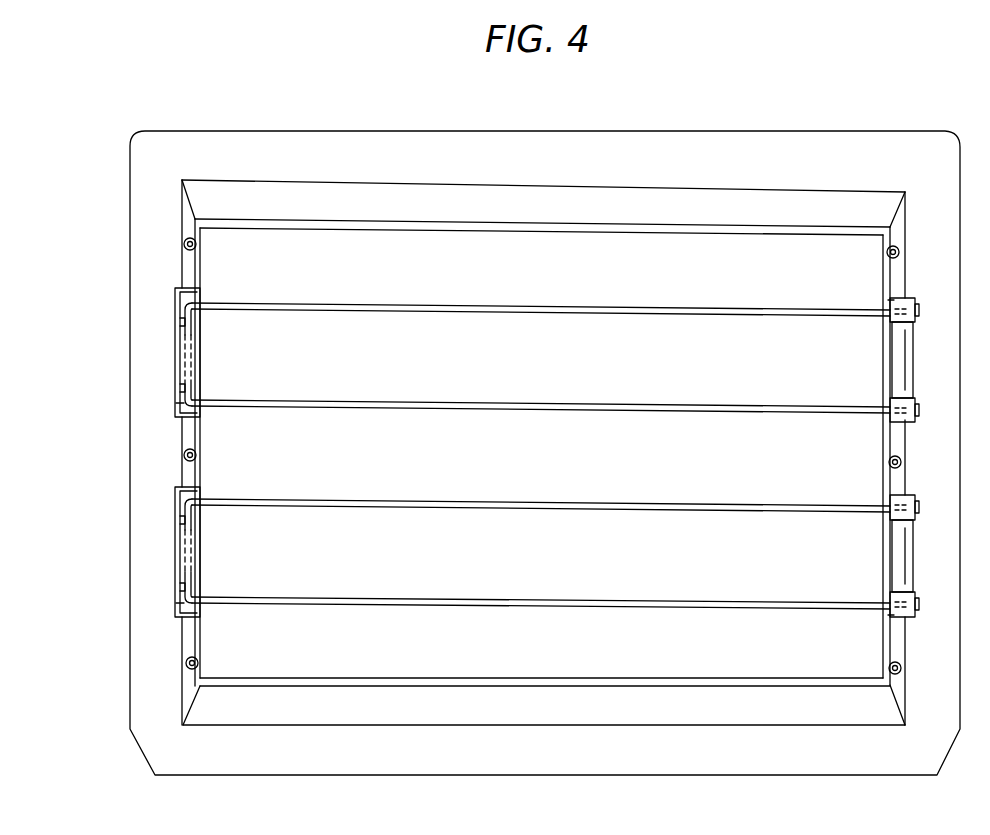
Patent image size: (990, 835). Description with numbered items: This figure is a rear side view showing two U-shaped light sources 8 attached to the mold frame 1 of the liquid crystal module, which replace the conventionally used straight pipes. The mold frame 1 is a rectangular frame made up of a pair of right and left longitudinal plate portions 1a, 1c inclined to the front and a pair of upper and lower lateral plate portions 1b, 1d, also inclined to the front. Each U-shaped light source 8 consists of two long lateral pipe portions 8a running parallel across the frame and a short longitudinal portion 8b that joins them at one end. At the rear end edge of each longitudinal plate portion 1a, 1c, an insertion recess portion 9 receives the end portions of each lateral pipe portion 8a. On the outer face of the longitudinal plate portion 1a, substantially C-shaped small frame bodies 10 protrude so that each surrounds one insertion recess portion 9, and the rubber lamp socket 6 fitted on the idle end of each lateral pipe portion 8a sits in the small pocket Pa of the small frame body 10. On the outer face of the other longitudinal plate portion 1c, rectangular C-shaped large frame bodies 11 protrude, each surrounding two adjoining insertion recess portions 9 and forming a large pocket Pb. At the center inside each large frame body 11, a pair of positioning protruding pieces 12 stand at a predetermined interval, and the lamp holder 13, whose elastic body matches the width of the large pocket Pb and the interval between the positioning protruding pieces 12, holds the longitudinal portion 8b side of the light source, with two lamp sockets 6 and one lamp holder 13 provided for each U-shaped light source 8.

The mold frame 1 is at (127, 171).
The longitudinal plate portion 1a is at (900, 232).
The upper lateral plate portion 1b is at (533, 204).
The longitudinal plate portion 1c is at (186, 226).
The lower lateral plate portion 1d is at (540, 710).
The lamp socket 6 is at (906, 299).
The U-shaped light source 8 is at (568, 412).
The lateral pipe portion 8a is at (434, 311).
The longitudinal portion 8b is at (176, 382).
The insertion recess portion 9 is at (200, 302).
The small frame body 10 is at (914, 355).
The large frame body 11 is at (175, 305).
The positioning protruding piece 12 is at (175, 388).
The lamp holder 13 is at (204, 347).
The small pocket Pa is at (890, 298).
The large pocket Pb is at (176, 405).